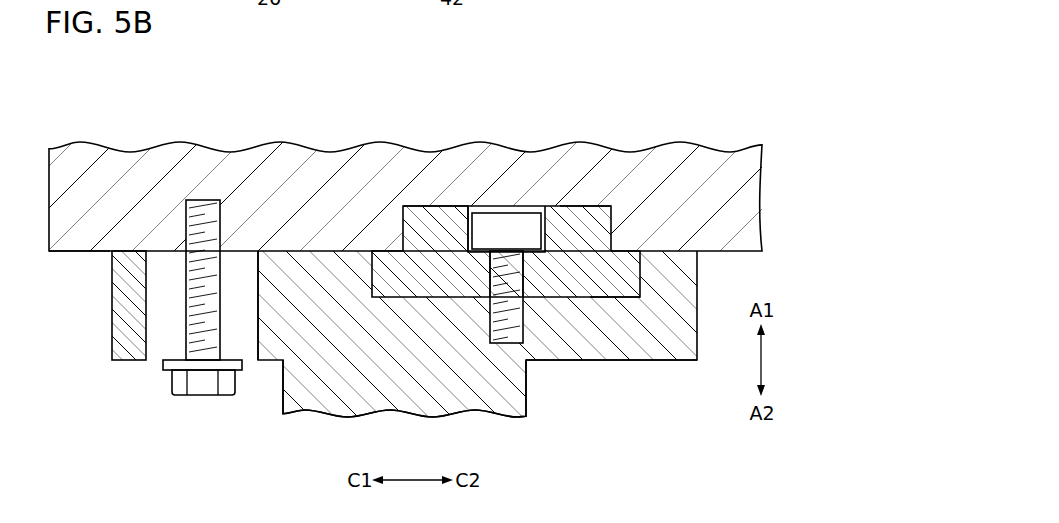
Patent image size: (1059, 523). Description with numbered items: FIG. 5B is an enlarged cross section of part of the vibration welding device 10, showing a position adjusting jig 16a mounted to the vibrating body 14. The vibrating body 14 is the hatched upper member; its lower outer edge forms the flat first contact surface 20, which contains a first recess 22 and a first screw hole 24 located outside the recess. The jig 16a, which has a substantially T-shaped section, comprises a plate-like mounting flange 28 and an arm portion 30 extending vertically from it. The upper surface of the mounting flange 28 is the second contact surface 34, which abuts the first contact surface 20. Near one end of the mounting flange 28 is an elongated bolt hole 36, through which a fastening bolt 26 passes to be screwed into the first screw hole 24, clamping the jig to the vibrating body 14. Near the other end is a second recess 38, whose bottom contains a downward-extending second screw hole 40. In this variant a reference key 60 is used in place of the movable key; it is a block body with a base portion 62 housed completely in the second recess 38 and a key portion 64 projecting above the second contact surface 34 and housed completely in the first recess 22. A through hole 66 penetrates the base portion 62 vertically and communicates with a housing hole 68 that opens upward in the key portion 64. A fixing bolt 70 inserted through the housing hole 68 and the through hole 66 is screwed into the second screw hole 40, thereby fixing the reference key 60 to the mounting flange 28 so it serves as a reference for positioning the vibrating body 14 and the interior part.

The vibration welding device 10 is at (667, 63).
The vibrating body 14 is at (721, 130).
The position adjusting jig 16a is at (563, 404).
The first contact surface 20 is at (76, 253).
The first recess 22 is at (588, 211).
The first screw hole 24 is at (192, 208).
The fastening bolt 26 is at (202, 385).
The mounting flange 28 is at (667, 353).
The arm portion 30 is at (328, 398).
The second contact surface 34 is at (130, 250).
The bolt hole 36 is at (247, 352).
The second recess 38 is at (609, 296).
The second screw hole 40 is at (517, 340).
The reference key 60 is at (554, 195).
The base portion 62 is at (623, 278).
The key portion 64 is at (423, 230).
The through hole 66 is at (515, 275).
The housing hole 68 is at (476, 228).
The fixing bolt 70 is at (497, 227).